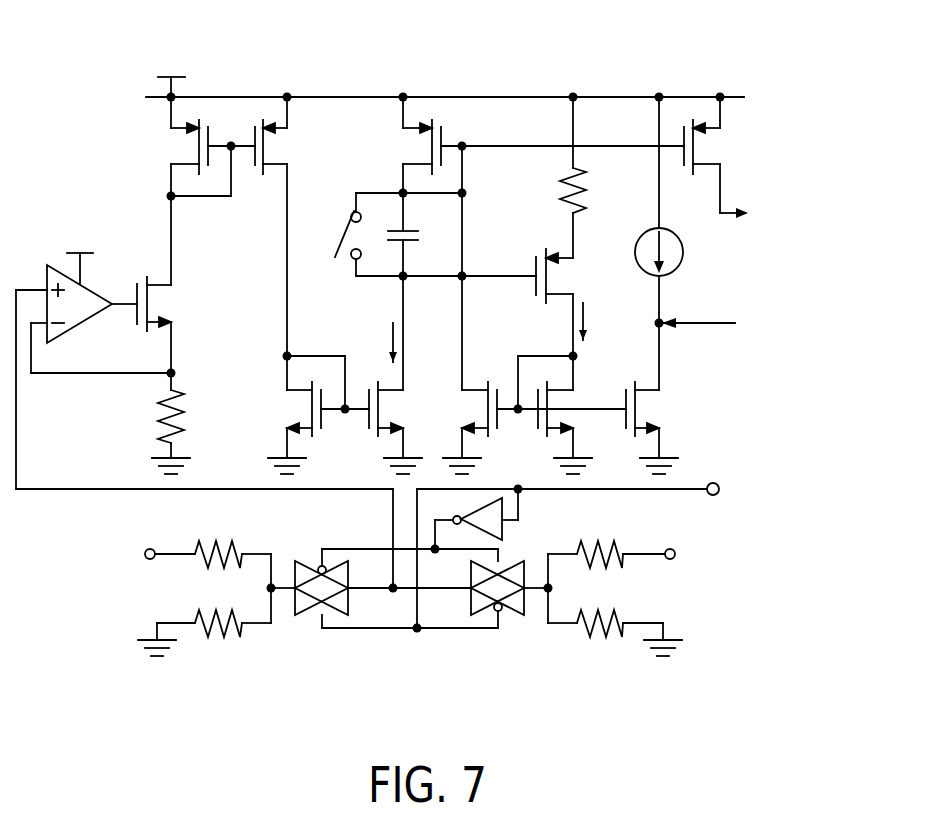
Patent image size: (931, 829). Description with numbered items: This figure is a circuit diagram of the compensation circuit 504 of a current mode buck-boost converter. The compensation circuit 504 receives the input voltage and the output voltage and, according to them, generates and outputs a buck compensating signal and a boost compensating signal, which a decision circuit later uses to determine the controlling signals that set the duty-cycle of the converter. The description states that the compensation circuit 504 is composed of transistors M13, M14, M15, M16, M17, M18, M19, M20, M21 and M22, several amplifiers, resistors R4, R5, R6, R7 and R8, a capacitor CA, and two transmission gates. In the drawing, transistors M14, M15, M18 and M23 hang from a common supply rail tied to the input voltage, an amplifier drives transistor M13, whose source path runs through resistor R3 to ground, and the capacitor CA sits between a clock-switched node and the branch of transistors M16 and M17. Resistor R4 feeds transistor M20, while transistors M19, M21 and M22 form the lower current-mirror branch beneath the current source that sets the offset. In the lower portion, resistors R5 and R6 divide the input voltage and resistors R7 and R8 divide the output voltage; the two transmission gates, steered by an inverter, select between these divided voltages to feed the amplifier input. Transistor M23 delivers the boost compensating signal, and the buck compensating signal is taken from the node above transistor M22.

The compensation circuit 504 is at (78, 33).
The transistor M13 is at (174, 304).
The transistor M14 is at (178, 147).
The transistor M15 is at (291, 147).
The transistor M16 is at (285, 409).
The transistor M17 is at (406, 409).
The transistor M18 is at (404, 147).
The transistor M19 is at (485, 397).
The transistor M20 is at (575, 276).
The transistor M21 is at (541, 422).
The transistor M22 is at (663, 409).
The transistor M23 is at (722, 147).
The resistor R3 is at (156, 416).
The resistor R4 is at (558, 190).
The resistor R5 is at (218, 541).
The resistor R6 is at (218, 639).
The resistor R7 is at (600, 542).
The resistor R8 is at (600, 639).
The capacitor CA is at (417, 241).